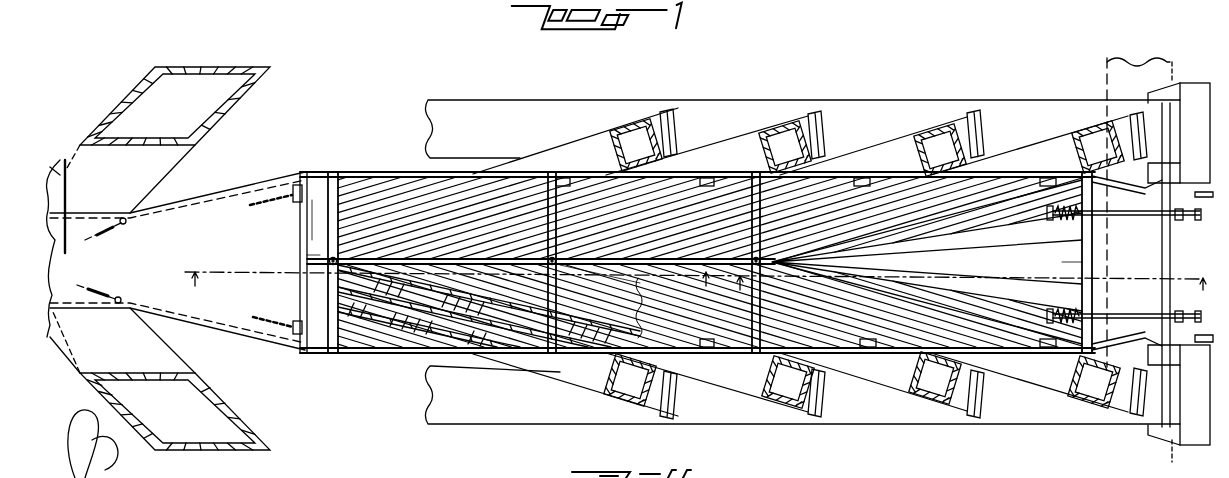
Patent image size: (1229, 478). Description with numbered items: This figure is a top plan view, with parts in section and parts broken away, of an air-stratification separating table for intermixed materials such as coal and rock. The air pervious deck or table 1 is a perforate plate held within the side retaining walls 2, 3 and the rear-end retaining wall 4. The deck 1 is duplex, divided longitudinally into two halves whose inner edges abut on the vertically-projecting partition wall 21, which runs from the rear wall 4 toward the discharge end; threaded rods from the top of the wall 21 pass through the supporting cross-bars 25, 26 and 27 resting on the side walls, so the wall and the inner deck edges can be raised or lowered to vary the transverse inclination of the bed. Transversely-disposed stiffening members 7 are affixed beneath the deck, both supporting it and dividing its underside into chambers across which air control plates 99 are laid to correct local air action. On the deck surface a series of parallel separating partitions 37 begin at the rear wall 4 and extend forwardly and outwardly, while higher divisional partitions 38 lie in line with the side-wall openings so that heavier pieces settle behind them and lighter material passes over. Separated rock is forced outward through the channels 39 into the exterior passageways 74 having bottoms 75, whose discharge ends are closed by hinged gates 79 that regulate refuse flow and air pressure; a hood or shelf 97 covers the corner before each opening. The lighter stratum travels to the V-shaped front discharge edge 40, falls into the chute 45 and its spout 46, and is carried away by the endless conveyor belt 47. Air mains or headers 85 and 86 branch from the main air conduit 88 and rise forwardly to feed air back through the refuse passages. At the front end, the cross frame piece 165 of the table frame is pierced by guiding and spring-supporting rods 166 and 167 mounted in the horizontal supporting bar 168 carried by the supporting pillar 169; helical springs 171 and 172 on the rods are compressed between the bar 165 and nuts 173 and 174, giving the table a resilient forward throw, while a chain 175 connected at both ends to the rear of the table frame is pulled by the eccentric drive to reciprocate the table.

The air pervious deck or table 1 is at (433, 185).
The side retaining wall 2 is at (524, 137).
The side retaining wall 3 is at (385, 386).
The rear-end retaining wall 4 is at (305, 256).
The transversely-disposed stiffening members 7 is at (388, 322).
The partition wall 21 is at (318, 235).
The supporting cross-bar 25 is at (334, 160).
The supporting cross-bar 26 is at (553, 172).
The supporting cross-bar 27 is at (755, 172).
The separating partitions 37 is at (396, 185).
The divisional partitions 38 is at (488, 185).
The channels 39 is at (815, 182).
The front discharge edge 40 is at (973, 232).
The chute 45 is at (935, 265).
The spout 46 is at (1127, 256).
The endless conveyor belt 47 is at (1125, 75).
The passageways 74 is at (606, 120).
The bottoms of passageways 75 is at (552, 275).
The gates 79 is at (672, 125).
The main or header 85 is at (212, 40).
The main or header 86 is at (225, 420).
The main air conduit 88 is at (65, 170).
The hood or shelf 97 is at (570, 182).
The air control plates 99 is at (450, 286).
The cross frame piece 165 is at (1082, 253).
The guiding and spring-supporting rod 166 is at (1132, 203).
The guiding and spring-supporting rod 167 is at (1132, 308).
The supporting bar 168 is at (1185, 236).
The supporting pillar 169 is at (1190, 90).
The helical spring 171 is at (1066, 205).
The helical spring 172 is at (1066, 325).
The nut 173 is at (1047, 213).
The nut 174 is at (1047, 316).
The chain 175 is at (268, 200).